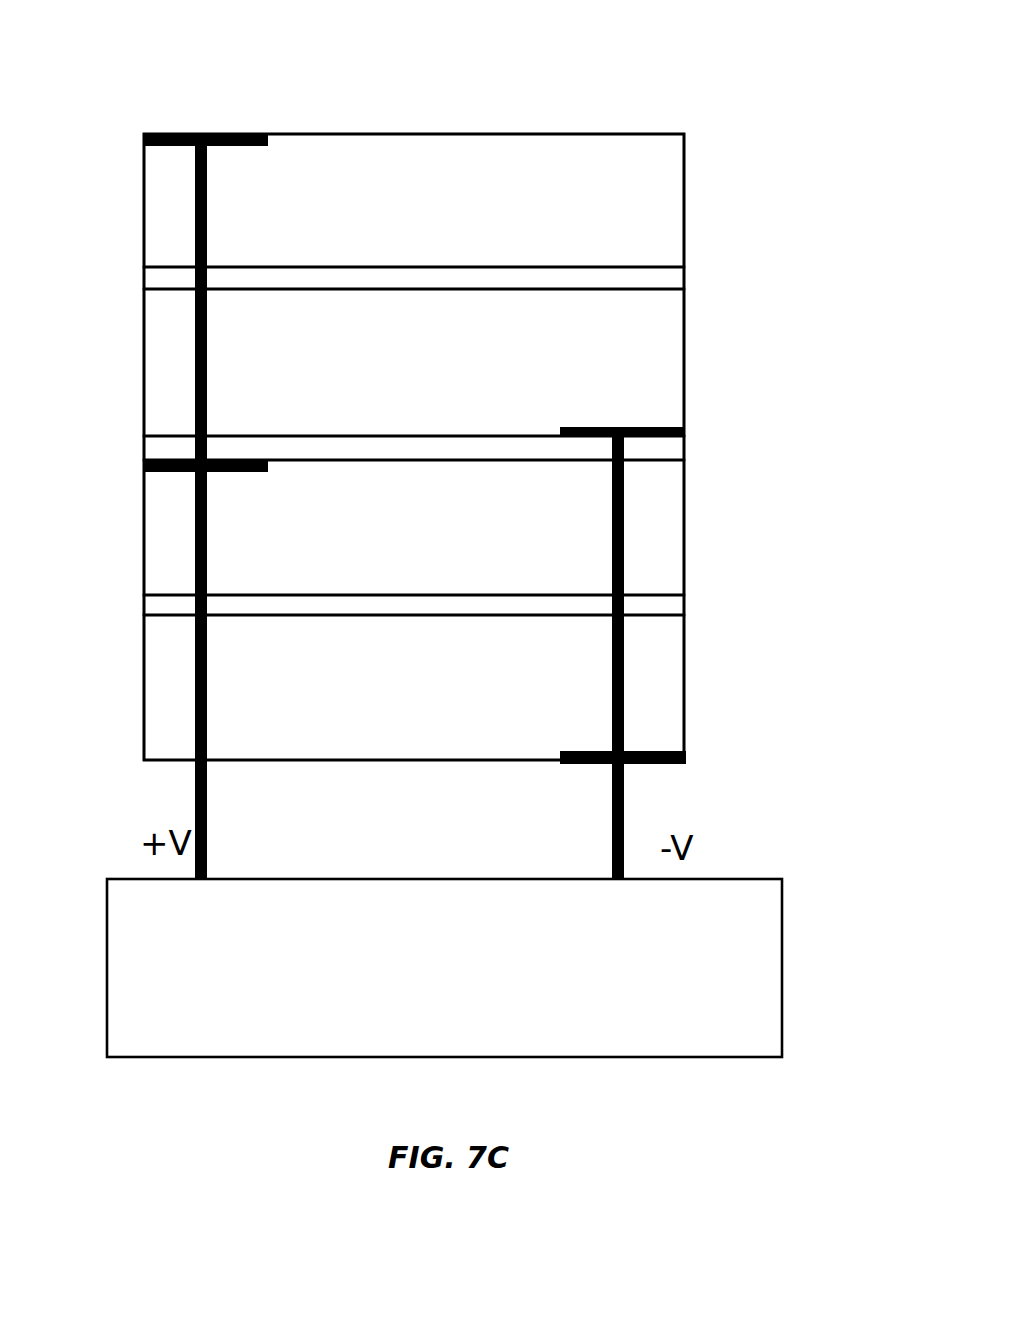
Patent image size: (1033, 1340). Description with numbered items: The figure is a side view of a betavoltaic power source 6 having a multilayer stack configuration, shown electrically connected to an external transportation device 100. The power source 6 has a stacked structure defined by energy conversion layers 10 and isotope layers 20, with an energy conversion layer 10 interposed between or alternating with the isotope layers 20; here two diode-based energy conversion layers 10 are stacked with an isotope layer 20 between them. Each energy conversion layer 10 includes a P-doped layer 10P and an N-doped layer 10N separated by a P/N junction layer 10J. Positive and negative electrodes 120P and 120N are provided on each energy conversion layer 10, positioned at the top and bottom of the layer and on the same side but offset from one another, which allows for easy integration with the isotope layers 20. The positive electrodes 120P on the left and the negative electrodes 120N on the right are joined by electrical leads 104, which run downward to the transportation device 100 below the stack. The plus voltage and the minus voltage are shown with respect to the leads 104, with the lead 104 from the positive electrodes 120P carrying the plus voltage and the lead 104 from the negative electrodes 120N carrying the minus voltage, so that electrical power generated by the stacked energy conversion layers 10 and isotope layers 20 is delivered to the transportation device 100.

The betavoltaic power source 6 is at (683, 73).
The energy conversion layer 10 is at (707, 139).
The P-doped layer 10P is at (439, 210).
The N-doped layer 10N is at (446, 362).
The P/N junction layer 10J is at (146, 280).
The isotope layer 20 is at (686, 453).
The positive electrode 120P is at (158, 133).
The negative electrode 120N is at (591, 427).
The electrical leads 104 is at (195, 800).
The transportation device 100 is at (472, 991).